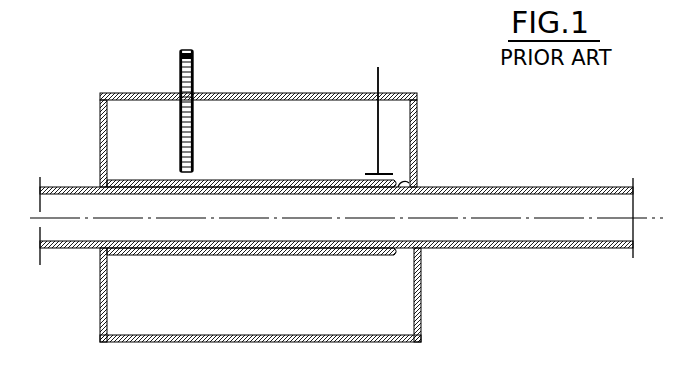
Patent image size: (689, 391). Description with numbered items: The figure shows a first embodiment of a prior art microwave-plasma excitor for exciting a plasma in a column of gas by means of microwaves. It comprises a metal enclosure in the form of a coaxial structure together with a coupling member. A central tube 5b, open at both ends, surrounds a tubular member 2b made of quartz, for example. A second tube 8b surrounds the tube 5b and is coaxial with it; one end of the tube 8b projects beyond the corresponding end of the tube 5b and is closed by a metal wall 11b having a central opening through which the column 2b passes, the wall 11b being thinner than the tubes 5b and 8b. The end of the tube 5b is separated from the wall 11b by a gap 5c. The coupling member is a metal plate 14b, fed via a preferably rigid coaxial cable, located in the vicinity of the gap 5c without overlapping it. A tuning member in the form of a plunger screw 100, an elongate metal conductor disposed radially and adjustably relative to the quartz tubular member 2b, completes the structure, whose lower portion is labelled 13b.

The tubular member 2b is at (504, 249).
The second tube 8b is at (319, 93).
The gap 5c is at (410, 185).
The plunger screw 100 is at (194, 70).
The metal plate 14b is at (371, 174).
The metal wall 11b is at (422, 312).
The central tube 5b is at (191, 249).
The lower housing bottom wall 13b is at (263, 300).